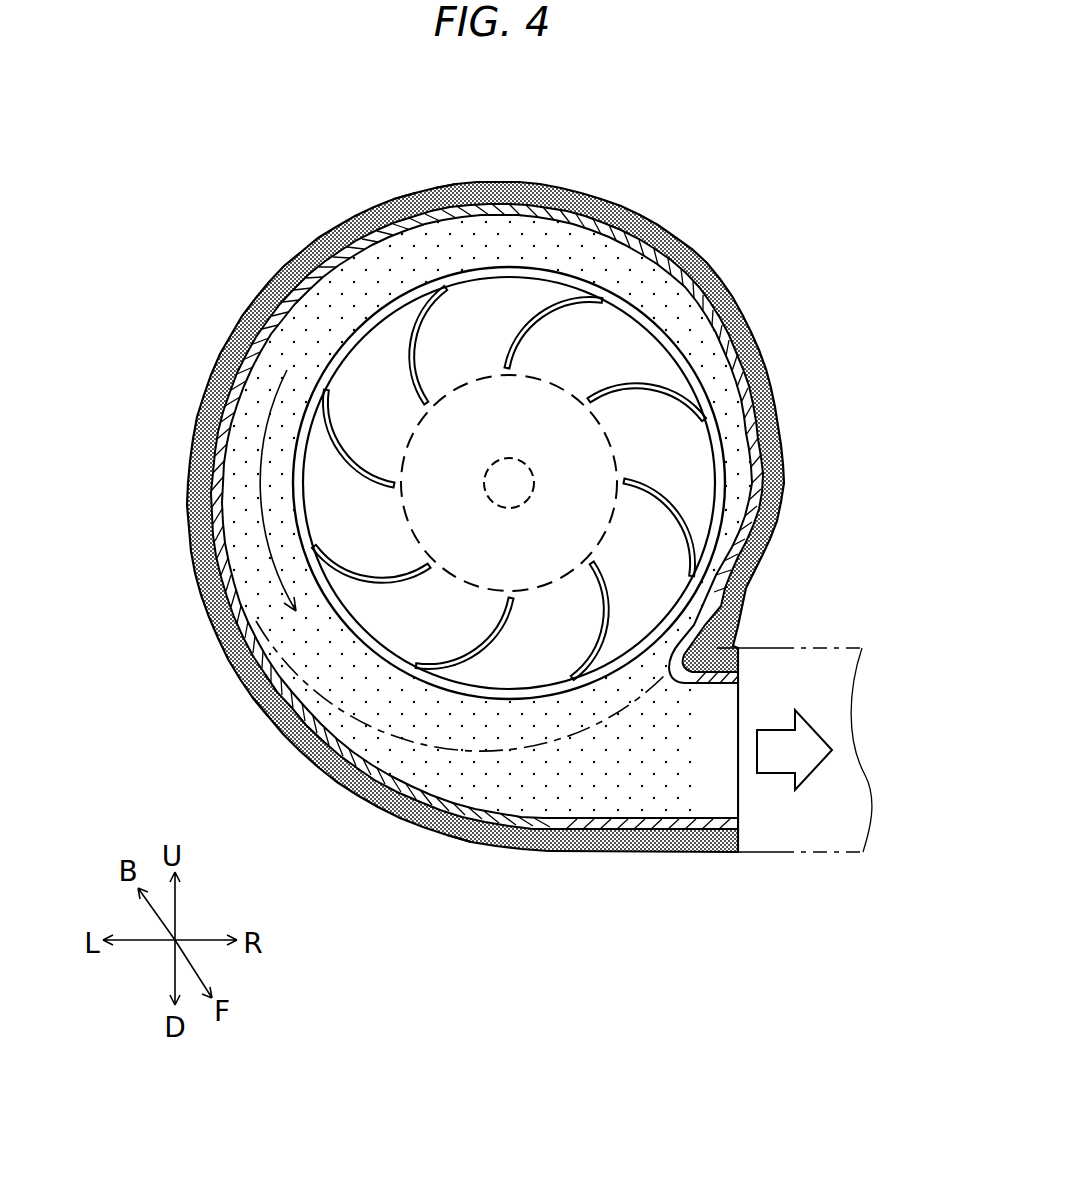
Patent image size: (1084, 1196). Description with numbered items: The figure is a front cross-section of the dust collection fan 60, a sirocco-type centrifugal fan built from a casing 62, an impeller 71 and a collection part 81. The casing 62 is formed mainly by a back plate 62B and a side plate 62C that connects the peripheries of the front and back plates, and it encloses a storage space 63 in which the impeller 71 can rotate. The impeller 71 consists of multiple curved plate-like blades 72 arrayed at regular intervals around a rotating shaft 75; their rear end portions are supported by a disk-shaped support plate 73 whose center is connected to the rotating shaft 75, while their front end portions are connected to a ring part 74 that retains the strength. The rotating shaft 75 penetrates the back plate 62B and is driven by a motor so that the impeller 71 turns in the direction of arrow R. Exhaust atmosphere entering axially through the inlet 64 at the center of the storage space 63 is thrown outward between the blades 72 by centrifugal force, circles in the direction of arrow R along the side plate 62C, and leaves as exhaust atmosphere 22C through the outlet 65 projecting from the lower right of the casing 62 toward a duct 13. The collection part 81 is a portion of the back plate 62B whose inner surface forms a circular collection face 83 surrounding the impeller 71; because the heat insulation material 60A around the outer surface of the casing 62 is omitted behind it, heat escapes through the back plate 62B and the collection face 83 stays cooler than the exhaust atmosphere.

The dust collection fan 60 is at (634, 136).
The heat insulation material 60A is at (384, 204).
The casing 62 is at (505, 190).
The back plate 62B is at (478, 769).
The side plate 62C is at (435, 205).
The storage space 63 is at (553, 784).
The inlet 64 is at (453, 574).
The outlet 65 is at (703, 820).
The impeller 71 is at (637, 303).
The blades 72 is at (442, 323).
The support plate 73 is at (660, 330).
The ring part 74 is at (598, 290).
The rotating shaft 75 is at (512, 457).
The collection part 81 is at (278, 727).
The collection face 83 is at (329, 746).
The duct 13 is at (819, 647).
The exhaust atmosphere 22C is at (780, 730).
The rotation direction arrow R is at (260, 490).